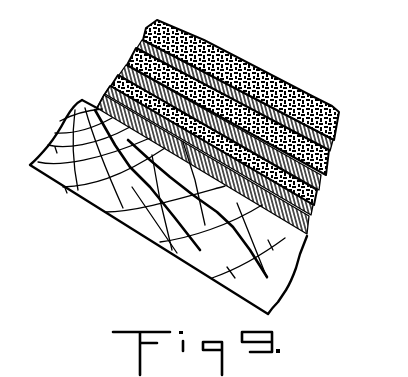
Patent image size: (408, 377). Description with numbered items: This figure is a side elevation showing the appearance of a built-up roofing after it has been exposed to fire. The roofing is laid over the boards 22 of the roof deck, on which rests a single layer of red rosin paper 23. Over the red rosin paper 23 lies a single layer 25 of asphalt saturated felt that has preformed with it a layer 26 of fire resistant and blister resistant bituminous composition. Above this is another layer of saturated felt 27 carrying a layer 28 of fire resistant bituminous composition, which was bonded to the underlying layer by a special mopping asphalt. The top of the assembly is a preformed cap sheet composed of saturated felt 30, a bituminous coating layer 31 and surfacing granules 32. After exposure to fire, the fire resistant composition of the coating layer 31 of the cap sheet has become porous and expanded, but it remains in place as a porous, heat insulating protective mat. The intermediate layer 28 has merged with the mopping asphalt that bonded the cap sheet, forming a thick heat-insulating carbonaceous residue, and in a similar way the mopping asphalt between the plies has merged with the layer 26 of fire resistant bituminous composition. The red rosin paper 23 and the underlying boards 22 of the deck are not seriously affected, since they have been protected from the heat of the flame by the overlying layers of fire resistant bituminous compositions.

The boards 22 is at (281, 278).
The red rosin paper 23 is at (304, 231).
The asphalt saturated felt layer 25 is at (101, 98).
The fire resistant bituminous composition layer 26 is at (304, 208).
The saturated felt 27 is at (304, 193).
The fire resistant bituminous composition layer 28 is at (315, 174).
The saturated felt 30 is at (325, 162).
The bituminous coating layer 31 is at (329, 146).
The surfacing granules 32 is at (294, 97).